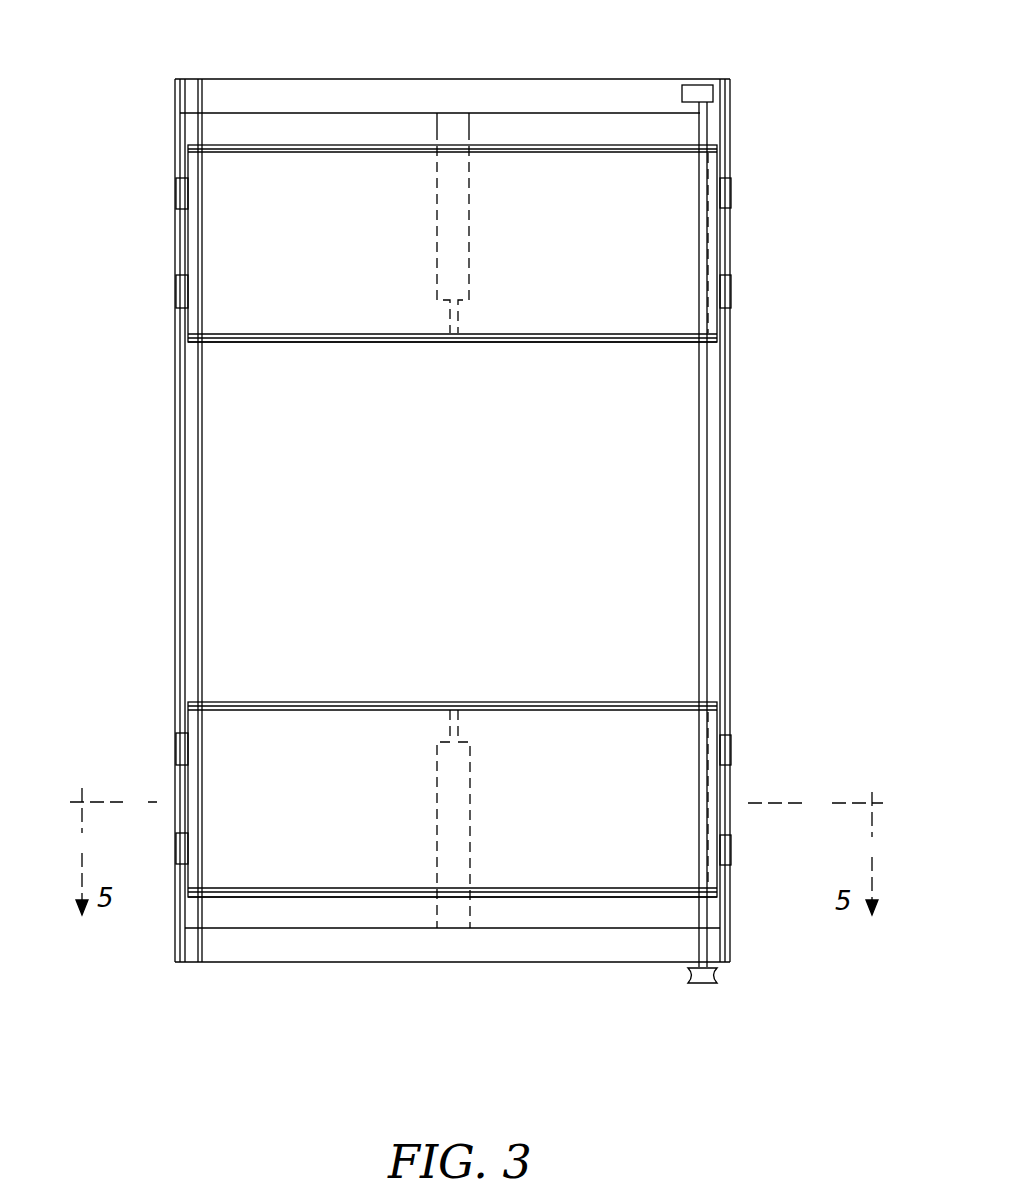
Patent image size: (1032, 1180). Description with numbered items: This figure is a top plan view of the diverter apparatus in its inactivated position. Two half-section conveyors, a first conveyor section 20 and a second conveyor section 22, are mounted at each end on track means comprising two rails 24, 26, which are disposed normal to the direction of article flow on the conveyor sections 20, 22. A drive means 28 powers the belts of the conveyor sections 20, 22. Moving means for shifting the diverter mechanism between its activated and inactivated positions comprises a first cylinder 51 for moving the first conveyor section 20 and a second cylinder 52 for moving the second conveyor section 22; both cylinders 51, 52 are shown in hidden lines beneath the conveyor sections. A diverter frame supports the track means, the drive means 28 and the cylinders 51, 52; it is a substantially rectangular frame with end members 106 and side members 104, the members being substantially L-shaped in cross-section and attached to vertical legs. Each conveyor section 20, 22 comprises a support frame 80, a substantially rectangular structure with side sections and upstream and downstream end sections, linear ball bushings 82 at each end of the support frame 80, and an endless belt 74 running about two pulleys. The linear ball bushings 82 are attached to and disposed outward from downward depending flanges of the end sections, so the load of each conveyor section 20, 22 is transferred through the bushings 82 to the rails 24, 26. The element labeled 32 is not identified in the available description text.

The first conveyor section 20 is at (165, 778).
The second conveyor section 22 is at (162, 238).
The rail 24 is at (180, 568).
The rail 26 is at (730, 550).
The drive means 28 is at (698, 72).
The vertical support post 32 is at (707, 497).
The first cylinder 51 is at (470, 870).
The second cylinder 52 is at (435, 125).
The endless belt 74 is at (668, 243).
The support frame 80 is at (673, 345).
The linear ball bushings 82 is at (178, 193).
The side members 104 is at (528, 78).
The end members 106 is at (175, 448).